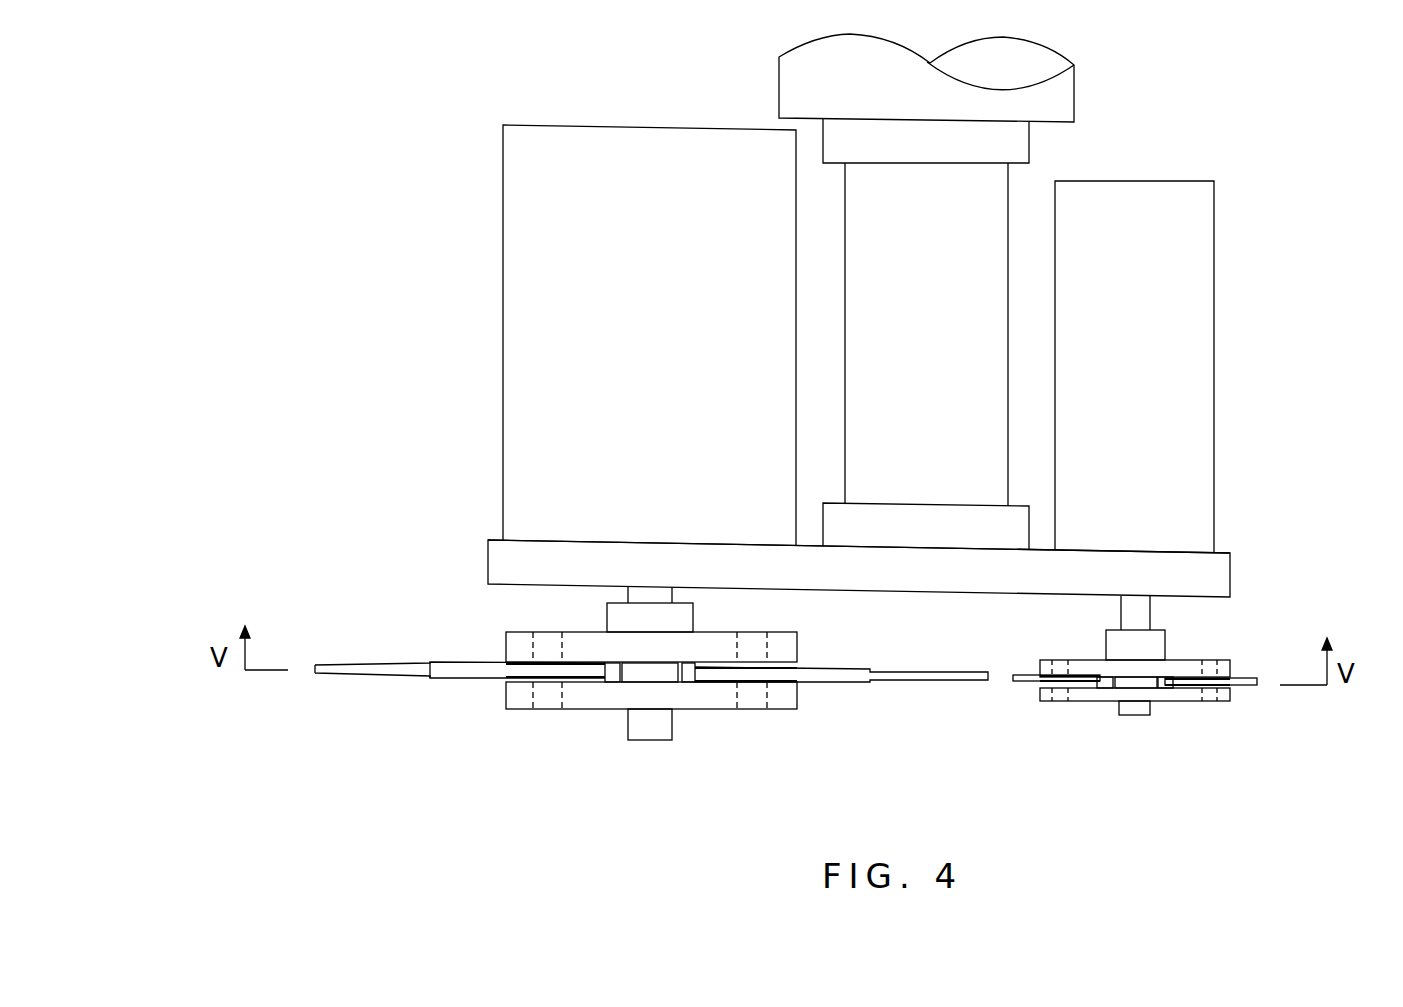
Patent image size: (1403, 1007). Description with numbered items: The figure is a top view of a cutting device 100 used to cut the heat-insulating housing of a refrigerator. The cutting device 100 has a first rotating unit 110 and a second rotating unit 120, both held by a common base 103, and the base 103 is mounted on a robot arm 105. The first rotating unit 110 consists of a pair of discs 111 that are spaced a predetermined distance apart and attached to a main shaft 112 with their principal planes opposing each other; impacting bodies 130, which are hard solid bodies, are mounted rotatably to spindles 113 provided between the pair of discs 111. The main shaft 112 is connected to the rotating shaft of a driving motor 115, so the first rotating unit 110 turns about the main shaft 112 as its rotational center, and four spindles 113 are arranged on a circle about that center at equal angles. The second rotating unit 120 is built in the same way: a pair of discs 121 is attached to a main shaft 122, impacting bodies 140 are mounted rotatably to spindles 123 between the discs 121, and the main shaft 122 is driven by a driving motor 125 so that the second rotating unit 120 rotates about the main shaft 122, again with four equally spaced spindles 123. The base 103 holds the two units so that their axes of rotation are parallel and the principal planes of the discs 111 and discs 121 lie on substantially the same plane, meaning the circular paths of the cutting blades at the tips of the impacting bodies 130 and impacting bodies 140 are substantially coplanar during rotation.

The cutting device 100 is at (403, 143).
The base 103 is at (1231, 575).
The robot arm 105 is at (1008, 192).
The first rotating unit 110 is at (1091, 706).
The discs 111 is at (1225, 660).
The main shaft 112 is at (1150, 612).
The spindles 113 is at (1200, 690).
The driving motor 115 is at (1214, 310).
The second rotating unit 120 is at (595, 713).
The discs 121 is at (790, 640).
The main shaft 122 is at (673, 592).
The spindles 123 is at (526, 700).
The driving motor 125 is at (503, 250).
The impacting bodies 130 is at (1250, 688).
The impacting bodies 140 is at (412, 675).